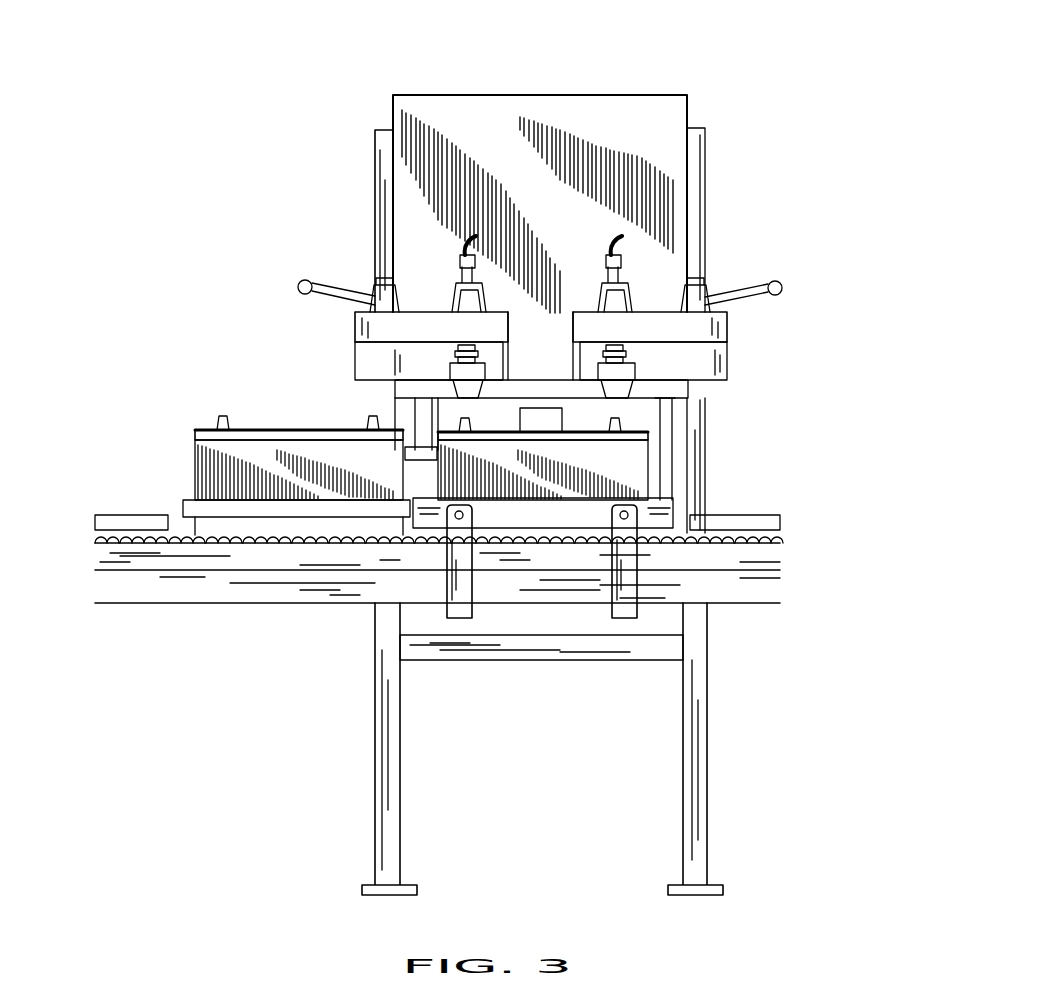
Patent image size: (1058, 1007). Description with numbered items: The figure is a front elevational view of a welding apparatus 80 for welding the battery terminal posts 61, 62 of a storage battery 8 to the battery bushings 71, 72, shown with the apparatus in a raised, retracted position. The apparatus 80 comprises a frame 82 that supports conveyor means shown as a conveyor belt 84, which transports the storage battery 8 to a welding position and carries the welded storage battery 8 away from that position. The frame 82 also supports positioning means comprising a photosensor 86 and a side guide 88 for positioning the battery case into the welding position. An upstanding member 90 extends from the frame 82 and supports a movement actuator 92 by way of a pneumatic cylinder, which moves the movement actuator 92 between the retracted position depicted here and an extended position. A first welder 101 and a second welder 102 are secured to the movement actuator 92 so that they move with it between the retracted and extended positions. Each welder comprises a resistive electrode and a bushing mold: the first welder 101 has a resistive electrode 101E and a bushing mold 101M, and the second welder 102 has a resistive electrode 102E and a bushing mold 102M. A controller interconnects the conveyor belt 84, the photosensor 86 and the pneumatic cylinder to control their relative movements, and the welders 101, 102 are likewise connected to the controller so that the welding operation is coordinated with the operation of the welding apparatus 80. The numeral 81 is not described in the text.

The welding apparatus 80 is at (798, 115).
The upstanding member 90 is at (375, 190).
The movement actuator 92 is at (647, 180).
The frame 82 is at (707, 733).
The conveyor belt 84 is at (163, 545).
The side guide 88 is at (237, 505).
The photosensor 86 is at (443, 473).
The battery terminal post 61 is at (335, 430).
The battery case 81 is at (292, 468).
The battery terminal post 62 is at (652, 440).
The storage battery 8 is at (545, 483).
The battery bushing 71 is at (463, 425).
The battery bushing 72 is at (640, 408).
The first welder 101 is at (300, 287).
The resistive electrode 101E is at (458, 362).
The bushing mold 101M is at (450, 377).
The second welder 102 is at (637, 378).
The resistive electrode 102E is at (625, 362).
The bushing mold 102M is at (688, 398).